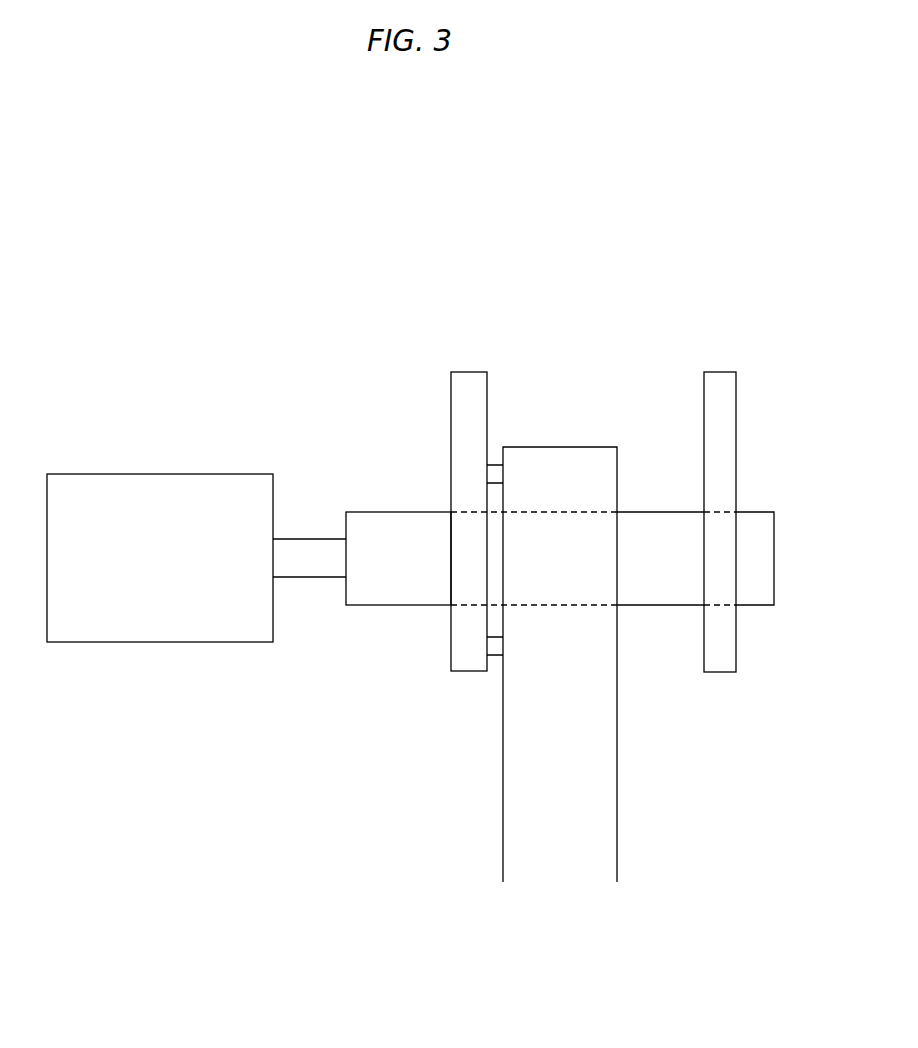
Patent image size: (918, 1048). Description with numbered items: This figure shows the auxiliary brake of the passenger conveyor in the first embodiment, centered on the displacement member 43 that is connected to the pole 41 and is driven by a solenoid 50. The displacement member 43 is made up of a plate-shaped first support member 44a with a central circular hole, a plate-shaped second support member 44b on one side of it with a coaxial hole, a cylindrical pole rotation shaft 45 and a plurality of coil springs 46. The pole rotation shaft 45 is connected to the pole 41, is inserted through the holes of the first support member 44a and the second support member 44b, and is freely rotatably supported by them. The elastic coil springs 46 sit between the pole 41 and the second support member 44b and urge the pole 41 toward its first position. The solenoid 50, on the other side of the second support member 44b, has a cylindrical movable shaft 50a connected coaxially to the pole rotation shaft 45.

The pole 41 is at (617, 760).
The displacement member 43 is at (454, 228).
The first support member 44a is at (718, 383).
The second support member 44b is at (465, 383).
The pole rotation shaft 45 is at (404, 606).
The coil springs 46 is at (495, 465).
The solenoid 50 is at (160, 642).
The movable shaft 50a is at (310, 558).